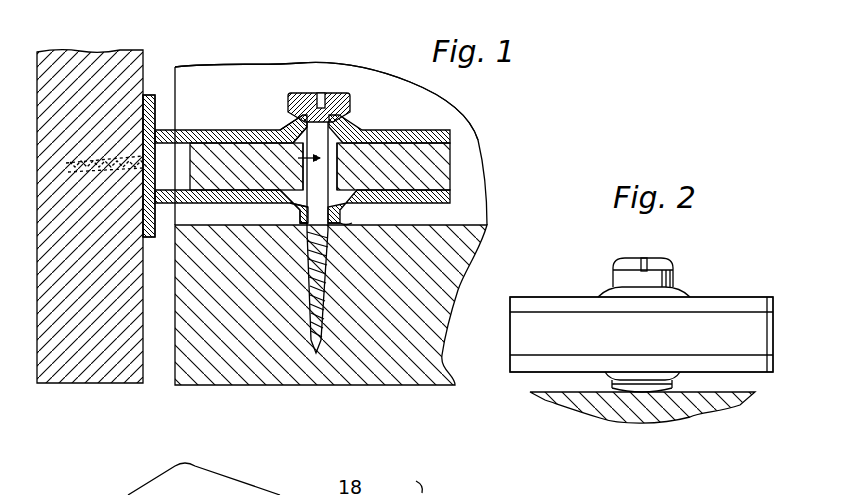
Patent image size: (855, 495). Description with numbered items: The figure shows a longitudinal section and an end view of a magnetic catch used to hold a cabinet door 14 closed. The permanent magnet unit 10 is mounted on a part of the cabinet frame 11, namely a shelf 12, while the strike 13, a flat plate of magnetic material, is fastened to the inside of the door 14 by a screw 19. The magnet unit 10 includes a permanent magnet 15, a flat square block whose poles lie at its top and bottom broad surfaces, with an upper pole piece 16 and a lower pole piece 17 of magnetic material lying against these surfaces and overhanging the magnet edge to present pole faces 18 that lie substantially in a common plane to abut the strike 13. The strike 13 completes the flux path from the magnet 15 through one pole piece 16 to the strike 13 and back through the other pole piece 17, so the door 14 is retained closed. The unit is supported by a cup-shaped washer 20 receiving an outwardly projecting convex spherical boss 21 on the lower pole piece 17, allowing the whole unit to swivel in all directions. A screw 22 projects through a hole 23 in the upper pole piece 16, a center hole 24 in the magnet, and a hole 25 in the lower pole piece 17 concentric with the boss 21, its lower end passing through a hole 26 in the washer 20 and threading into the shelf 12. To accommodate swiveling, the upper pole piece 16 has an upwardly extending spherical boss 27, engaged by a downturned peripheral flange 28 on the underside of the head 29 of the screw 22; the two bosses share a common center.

In FIG. 1, the permanent magnet unit 10 is at (438, 122).
In FIG. 2, the permanent magnet unit 10 is at (722, 296).
In FIG. 1, the cabinet frame 11 is at (481, 130).
In FIG. 1, the shelf 12 is at (388, 374).
In FIG. 2, the shelf 12 is at (633, 418).
In FIG. 1, the strike 13 is at (152, 94).
In FIG. 1, the cabinet door 14 is at (100, 378).
In FIG. 1, the permanent magnet 15 is at (337, 185).
In FIG. 2, the permanent magnet 15 is at (641, 339).
In FIG. 1, the upper pole piece 16 is at (302, 114).
In FIG. 2, the upper pole piece 16 is at (572, 300).
In FIG. 1, the lower pole piece 17 is at (302, 237).
In FIG. 2, the lower pole piece 17 is at (535, 368).
In FIG. 1, the pole faces 18 is at (150, 133).
In FIG. 1, the screw 19 is at (100, 180).
In FIG. 1, the cup-shaped washer 20 is at (352, 225).
In FIG. 2, the cup-shaped washer 20 is at (660, 392).
In FIG. 1, the boss 21 is at (284, 204).
In FIG. 1, the screw 22 is at (309, 318).
In FIG. 1, the hole 23 is at (358, 130).
In FIG. 1, the center hole 24 is at (331, 160).
In FIG. 1, the hole 25 is at (336, 240).
In FIG. 1, the hole 26 is at (302, 226).
In FIG. 1, the spherical boss 27 is at (290, 128).
In FIG. 2, the spherical boss 27 is at (676, 290).
In FIG. 1, the downturned peripheral flange 28 is at (340, 78).
In FIG. 2, the downturned peripheral flange 28 is at (638, 258).
In FIG. 1, the head 29 is at (322, 93).
In FIG. 2, the head 29 is at (655, 268).